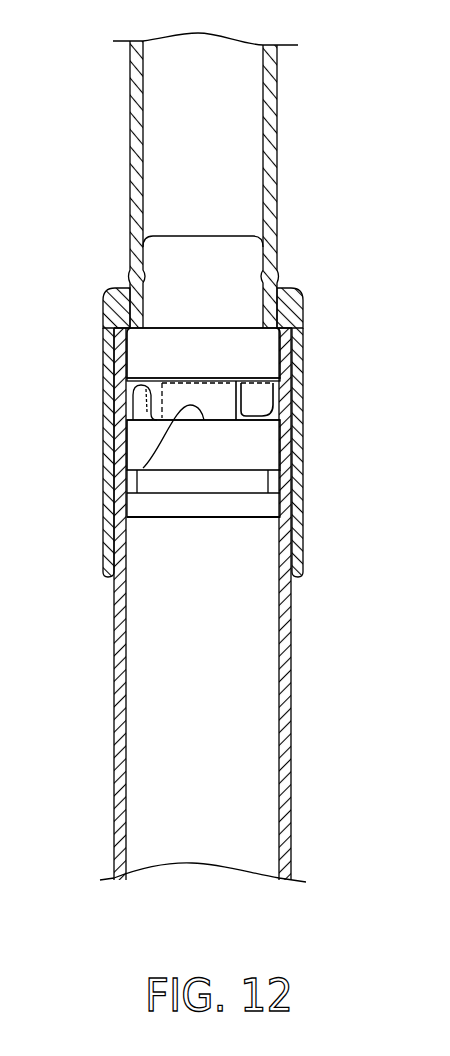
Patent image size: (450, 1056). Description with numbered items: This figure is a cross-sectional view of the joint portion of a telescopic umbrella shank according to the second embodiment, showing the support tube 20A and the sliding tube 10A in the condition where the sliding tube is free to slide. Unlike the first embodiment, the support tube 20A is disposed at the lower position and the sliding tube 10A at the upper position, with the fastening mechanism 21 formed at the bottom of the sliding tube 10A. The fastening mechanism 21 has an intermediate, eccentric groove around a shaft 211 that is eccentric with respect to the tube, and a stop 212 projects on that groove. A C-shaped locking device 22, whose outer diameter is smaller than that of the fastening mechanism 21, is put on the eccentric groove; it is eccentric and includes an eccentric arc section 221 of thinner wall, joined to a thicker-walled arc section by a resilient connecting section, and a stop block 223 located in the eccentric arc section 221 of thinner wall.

The sliding tube 10A is at (277, 112).
The support tube 20A is at (291, 665).
The fastening mechanism 21 is at (262, 357).
The stop 212 is at (270, 386).
The shaft 211 is at (225, 402).
The stop block 223 is at (140, 406).
The C-shaped locking device 22 is at (268, 454).
The eccentric arc section of thinner wall 221 is at (143, 468).